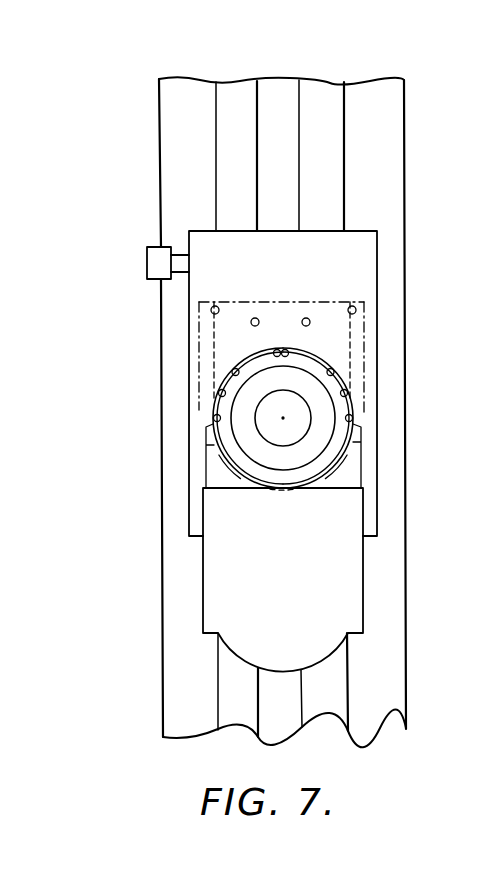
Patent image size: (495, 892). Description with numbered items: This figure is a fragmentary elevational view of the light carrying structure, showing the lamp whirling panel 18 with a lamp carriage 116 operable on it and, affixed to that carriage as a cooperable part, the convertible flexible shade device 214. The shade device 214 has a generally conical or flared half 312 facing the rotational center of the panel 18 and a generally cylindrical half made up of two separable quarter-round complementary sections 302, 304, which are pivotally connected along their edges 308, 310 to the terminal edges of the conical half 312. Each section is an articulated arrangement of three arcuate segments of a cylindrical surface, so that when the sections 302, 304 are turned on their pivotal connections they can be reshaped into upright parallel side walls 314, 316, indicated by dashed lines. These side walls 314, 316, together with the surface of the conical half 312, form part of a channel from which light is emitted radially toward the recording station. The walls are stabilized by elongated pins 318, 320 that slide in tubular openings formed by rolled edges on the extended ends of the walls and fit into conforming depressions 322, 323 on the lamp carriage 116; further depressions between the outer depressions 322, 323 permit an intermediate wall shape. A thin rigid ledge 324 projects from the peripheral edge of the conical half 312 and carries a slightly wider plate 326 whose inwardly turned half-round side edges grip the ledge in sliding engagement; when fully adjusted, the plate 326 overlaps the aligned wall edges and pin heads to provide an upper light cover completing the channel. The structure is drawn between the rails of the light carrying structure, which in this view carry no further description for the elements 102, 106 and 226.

The lamp whirling panel 18 is at (145, 164).
The frame rail 102 is at (345, 133).
The guide channel 106 is at (260, 95).
The lamp carriage 116 is at (201, 237).
The flexible shade device 214 is at (214, 448).
The limit switch 226 is at (149, 262).
The quarter-round complementary section 302 is at (221, 377).
The quarter-round complementary section 304 is at (338, 379).
The pivot edge 308 is at (214, 415).
The pivot edge 310 is at (352, 418).
The conical half 312 is at (331, 453).
The upright parallel side wall 314 is at (212, 338).
The upright parallel side wall 316 is at (352, 337).
The elongated pin 318 is at (276, 351).
The elongated pin 320 is at (286, 351).
The conforming depression 322 is at (241, 281).
The conforming depression 323 is at (350, 308).
The ledge 324 is at (336, 478).
The plate 326 is at (343, 578).